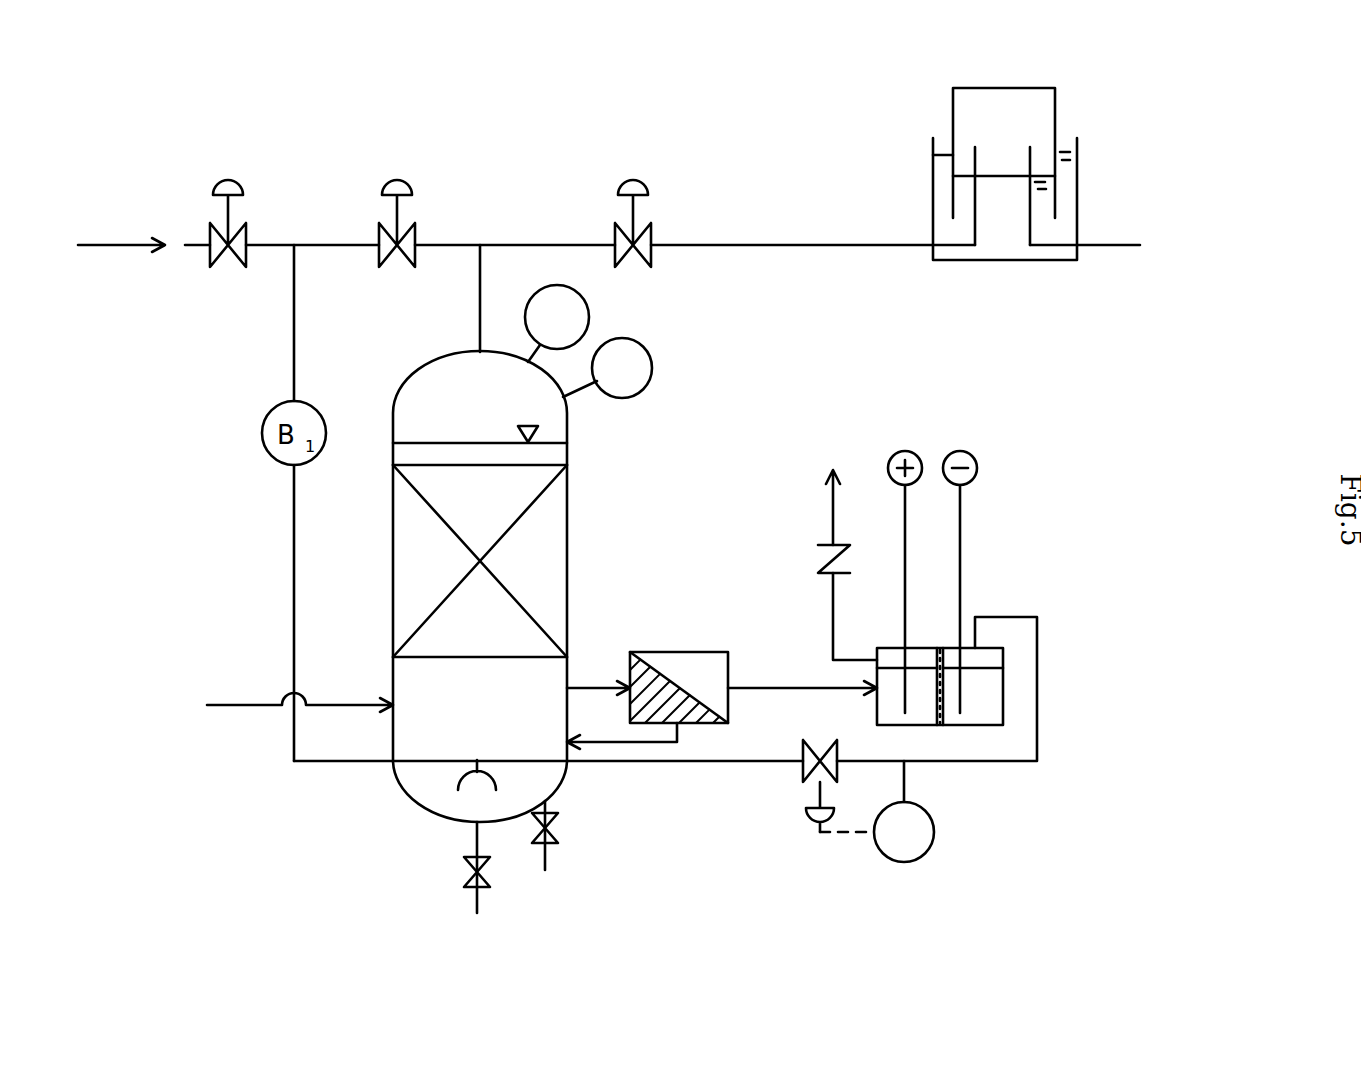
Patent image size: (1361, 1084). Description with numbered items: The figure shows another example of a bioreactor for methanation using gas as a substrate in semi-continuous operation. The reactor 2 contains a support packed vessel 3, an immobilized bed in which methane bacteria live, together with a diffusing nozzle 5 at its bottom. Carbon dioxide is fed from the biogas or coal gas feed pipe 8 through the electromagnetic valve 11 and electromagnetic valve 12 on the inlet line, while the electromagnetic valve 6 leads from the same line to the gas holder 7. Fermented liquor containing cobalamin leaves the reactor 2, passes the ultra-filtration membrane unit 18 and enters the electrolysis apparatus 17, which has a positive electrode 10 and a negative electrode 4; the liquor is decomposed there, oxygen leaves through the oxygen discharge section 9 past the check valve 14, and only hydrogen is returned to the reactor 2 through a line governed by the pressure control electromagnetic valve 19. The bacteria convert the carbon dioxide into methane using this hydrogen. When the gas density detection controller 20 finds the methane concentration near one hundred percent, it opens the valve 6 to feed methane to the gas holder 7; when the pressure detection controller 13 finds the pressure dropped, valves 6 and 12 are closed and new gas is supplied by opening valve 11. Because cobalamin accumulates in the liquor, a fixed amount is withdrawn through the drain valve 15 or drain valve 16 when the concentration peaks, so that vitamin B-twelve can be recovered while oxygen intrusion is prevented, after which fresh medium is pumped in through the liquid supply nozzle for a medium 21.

The reactor 2 is at (567, 490).
The support packed vessel 3 is at (535, 563).
The negative electrode 4 is at (960, 560).
The diffusing nozzle 5 is at (477, 783).
The electromagnetic valve 6 is at (633, 202).
The gas holder 7 is at (1005, 196).
The biogas or coal gas feed pipe 8 is at (105, 249).
The oxygen discharge section 9 is at (850, 544).
The positive electrode 10 is at (904, 560).
The electromagnetic valve 11 is at (227, 203).
The electromagnetic valve 12 is at (396, 203).
The pressure detection controller 13 is at (629, 366).
The check valve 14 is at (809, 558).
The drain valve 15 is at (567, 835).
The drain valve 16 is at (496, 867).
The electrolysis apparatus 17 is at (995, 707).
The ultra-filtration membrane unit 18 is at (679, 664).
The pressure control electromagnetic valve 19 is at (900, 811).
The gas density detection controller 20 is at (579, 319).
The liquid supply nozzle for a medium 21 is at (276, 707).